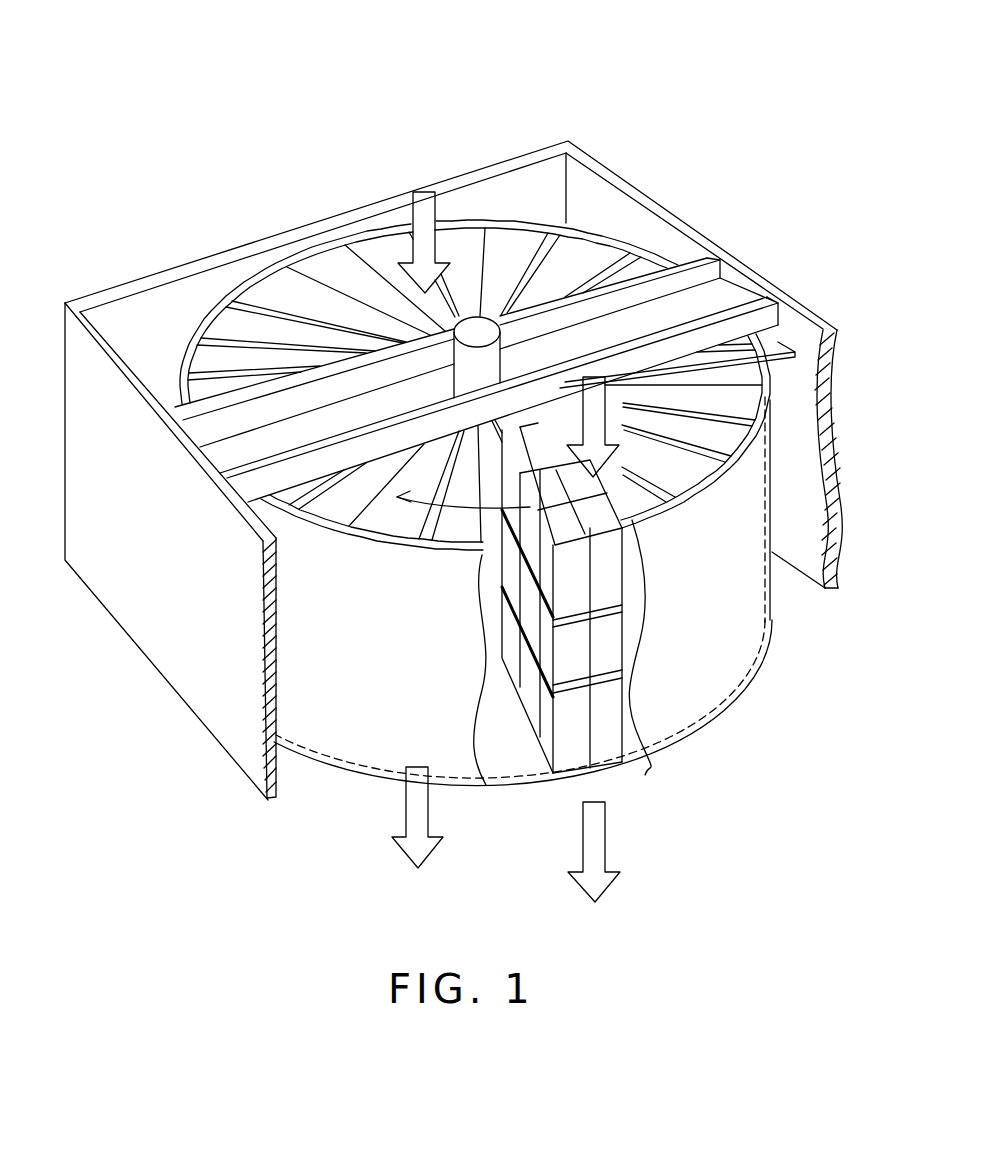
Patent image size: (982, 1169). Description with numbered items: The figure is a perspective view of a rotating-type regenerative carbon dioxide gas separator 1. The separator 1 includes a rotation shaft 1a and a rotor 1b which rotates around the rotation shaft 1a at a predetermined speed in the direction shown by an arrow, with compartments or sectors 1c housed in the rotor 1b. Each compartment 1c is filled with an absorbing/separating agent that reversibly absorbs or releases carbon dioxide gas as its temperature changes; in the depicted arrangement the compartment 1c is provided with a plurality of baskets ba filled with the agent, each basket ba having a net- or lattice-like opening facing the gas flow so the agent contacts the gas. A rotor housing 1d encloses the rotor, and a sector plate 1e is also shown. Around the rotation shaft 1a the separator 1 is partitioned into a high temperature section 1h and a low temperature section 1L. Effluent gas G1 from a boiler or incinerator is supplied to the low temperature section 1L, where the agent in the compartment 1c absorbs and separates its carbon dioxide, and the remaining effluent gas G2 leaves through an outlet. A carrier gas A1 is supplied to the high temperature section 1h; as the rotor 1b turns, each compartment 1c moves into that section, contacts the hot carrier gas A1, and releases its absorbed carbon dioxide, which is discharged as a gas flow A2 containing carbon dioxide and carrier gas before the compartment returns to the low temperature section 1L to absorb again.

The regenerative carbon dioxide gas separator 1 is at (570, 124).
The rotation shaft 1a is at (462, 380).
The rotor 1b is at (723, 657).
The compartment 1c is at (603, 577).
The rotor housing 1d is at (672, 247).
The sector plate 1e is at (782, 340).
The high temperature section 1h is at (457, 253).
The low temperature section 1L is at (660, 464).
The basket ba is at (620, 580).
The carrier gas A1 is at (420, 195).
The gas flow A2 is at (417, 803).
The effluent gas G1 is at (595, 376).
The effluent gas G2 is at (598, 840).